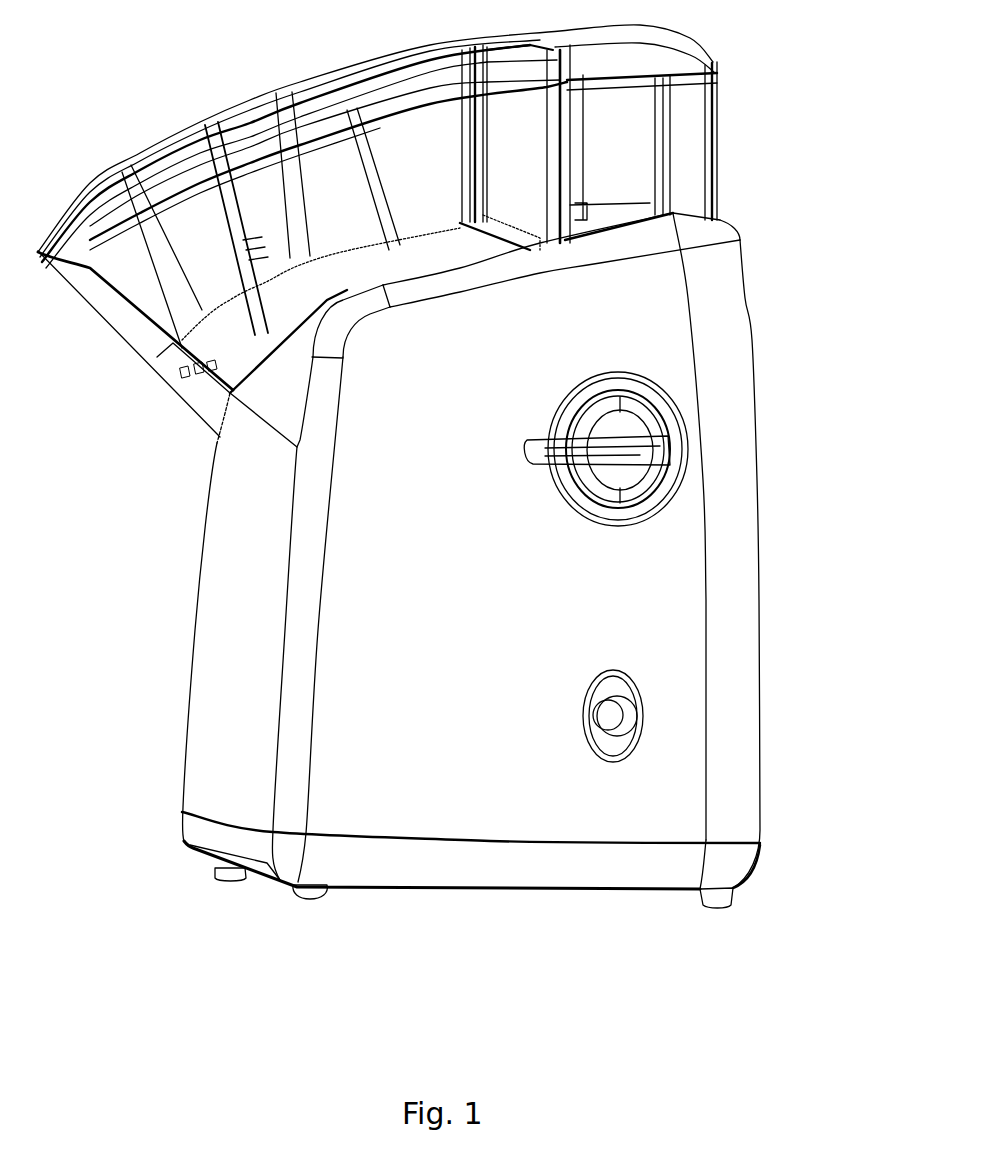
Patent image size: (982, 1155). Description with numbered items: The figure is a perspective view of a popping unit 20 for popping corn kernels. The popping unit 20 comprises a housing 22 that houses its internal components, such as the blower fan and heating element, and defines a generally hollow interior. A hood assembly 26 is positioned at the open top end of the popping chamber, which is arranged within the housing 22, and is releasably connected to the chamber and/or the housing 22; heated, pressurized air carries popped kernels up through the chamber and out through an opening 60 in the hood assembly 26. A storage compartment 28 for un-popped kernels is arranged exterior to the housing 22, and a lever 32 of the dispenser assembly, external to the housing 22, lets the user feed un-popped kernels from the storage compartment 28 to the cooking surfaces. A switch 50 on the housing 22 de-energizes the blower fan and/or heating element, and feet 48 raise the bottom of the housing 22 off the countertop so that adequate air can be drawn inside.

The popping unit 20 is at (760, 290).
The housing 22 is at (760, 518).
The hood assembly 26 is at (148, 152).
The storage compartment 28 is at (717, 100).
The lever 32 is at (672, 440).
The feet 48 is at (735, 892).
The switch 50 is at (640, 707).
The opening 60 is at (123, 293).